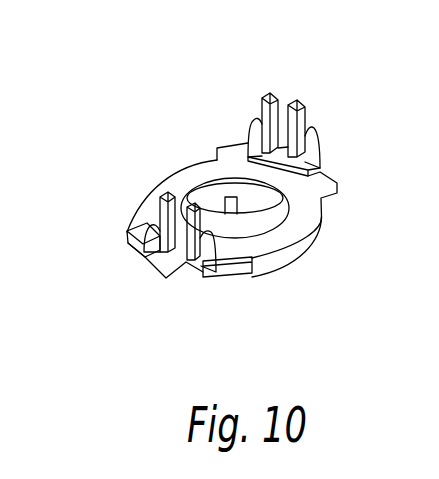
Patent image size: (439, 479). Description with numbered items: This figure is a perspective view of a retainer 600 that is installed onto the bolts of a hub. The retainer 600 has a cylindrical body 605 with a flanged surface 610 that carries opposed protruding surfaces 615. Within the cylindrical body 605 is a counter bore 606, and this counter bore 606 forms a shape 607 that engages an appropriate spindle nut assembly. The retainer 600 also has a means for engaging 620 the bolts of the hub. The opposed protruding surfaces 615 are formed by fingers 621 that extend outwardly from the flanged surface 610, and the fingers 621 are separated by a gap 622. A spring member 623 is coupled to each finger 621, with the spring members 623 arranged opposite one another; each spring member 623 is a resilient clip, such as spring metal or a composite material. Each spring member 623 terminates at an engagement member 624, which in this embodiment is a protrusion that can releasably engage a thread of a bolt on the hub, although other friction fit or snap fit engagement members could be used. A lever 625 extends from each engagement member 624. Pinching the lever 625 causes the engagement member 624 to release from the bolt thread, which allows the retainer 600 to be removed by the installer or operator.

The retainer 600 is at (118, 83).
The cylindrical body 605 is at (289, 265).
The counter bore 606 is at (237, 212).
The shape 607 is at (220, 212).
The flanged surface 610 is at (318, 218).
The protruding surfaces 615 is at (318, 176).
The means for engaging 620 is at (308, 92).
The fingers 621 is at (137, 232).
The gap 622 is at (289, 152).
The spring member 623 is at (256, 127).
The engagement member 624 is at (157, 256).
The lever 625 is at (182, 254).